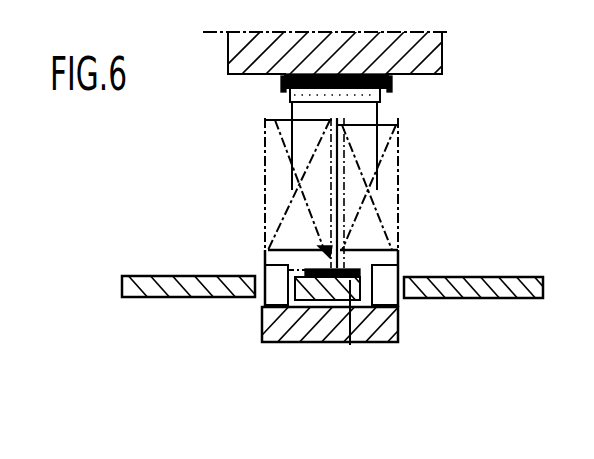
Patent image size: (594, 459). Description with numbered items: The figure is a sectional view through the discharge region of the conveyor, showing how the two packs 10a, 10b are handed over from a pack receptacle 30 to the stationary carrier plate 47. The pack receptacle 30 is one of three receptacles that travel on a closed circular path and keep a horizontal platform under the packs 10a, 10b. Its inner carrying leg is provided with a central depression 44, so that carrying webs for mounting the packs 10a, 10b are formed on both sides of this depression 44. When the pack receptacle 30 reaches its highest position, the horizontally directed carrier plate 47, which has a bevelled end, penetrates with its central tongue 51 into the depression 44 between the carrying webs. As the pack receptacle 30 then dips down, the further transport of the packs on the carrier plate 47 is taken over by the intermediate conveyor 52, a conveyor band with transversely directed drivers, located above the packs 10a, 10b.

The intermediate conveyor 52 is at (425, 60).
The pack 10a is at (280, 212).
The pack 10b is at (385, 197).
The central depression 44 is at (265, 307).
The pack receptacle 30 is at (272, 352).
The central tongue 51 is at (350, 345).
The carrier plate 47 is at (455, 332).